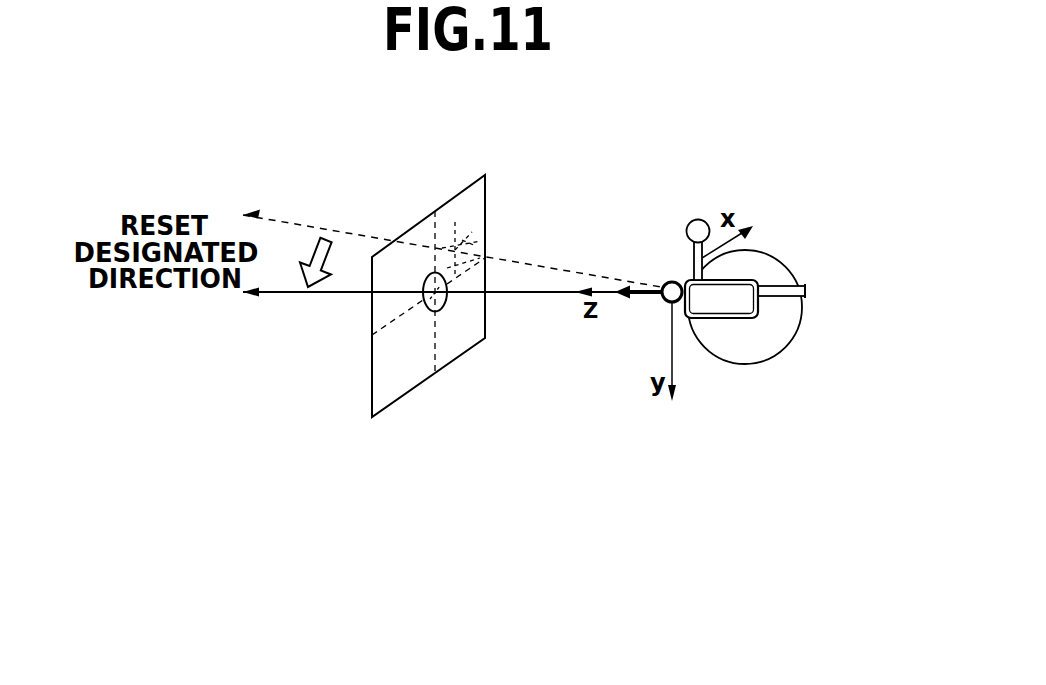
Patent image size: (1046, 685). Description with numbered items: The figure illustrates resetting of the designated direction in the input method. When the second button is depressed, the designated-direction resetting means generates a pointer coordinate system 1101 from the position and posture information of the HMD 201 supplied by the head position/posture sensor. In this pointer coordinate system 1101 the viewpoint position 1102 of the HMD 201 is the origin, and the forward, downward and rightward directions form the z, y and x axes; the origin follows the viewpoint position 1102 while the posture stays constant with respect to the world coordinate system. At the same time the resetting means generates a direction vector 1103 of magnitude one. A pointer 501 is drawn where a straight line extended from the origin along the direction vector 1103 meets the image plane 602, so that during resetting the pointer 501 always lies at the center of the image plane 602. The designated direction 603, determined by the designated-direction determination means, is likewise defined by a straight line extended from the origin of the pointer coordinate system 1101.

The HMD 201 is at (757, 303).
The pointer 501 is at (447, 305).
The image plane 602 is at (413, 390).
The designated direction 603 is at (337, 295).
The pointer coordinate system 1101 is at (685, 352).
The viewpoint position 1102 is at (667, 282).
The direction vector 1103 is at (614, 286).